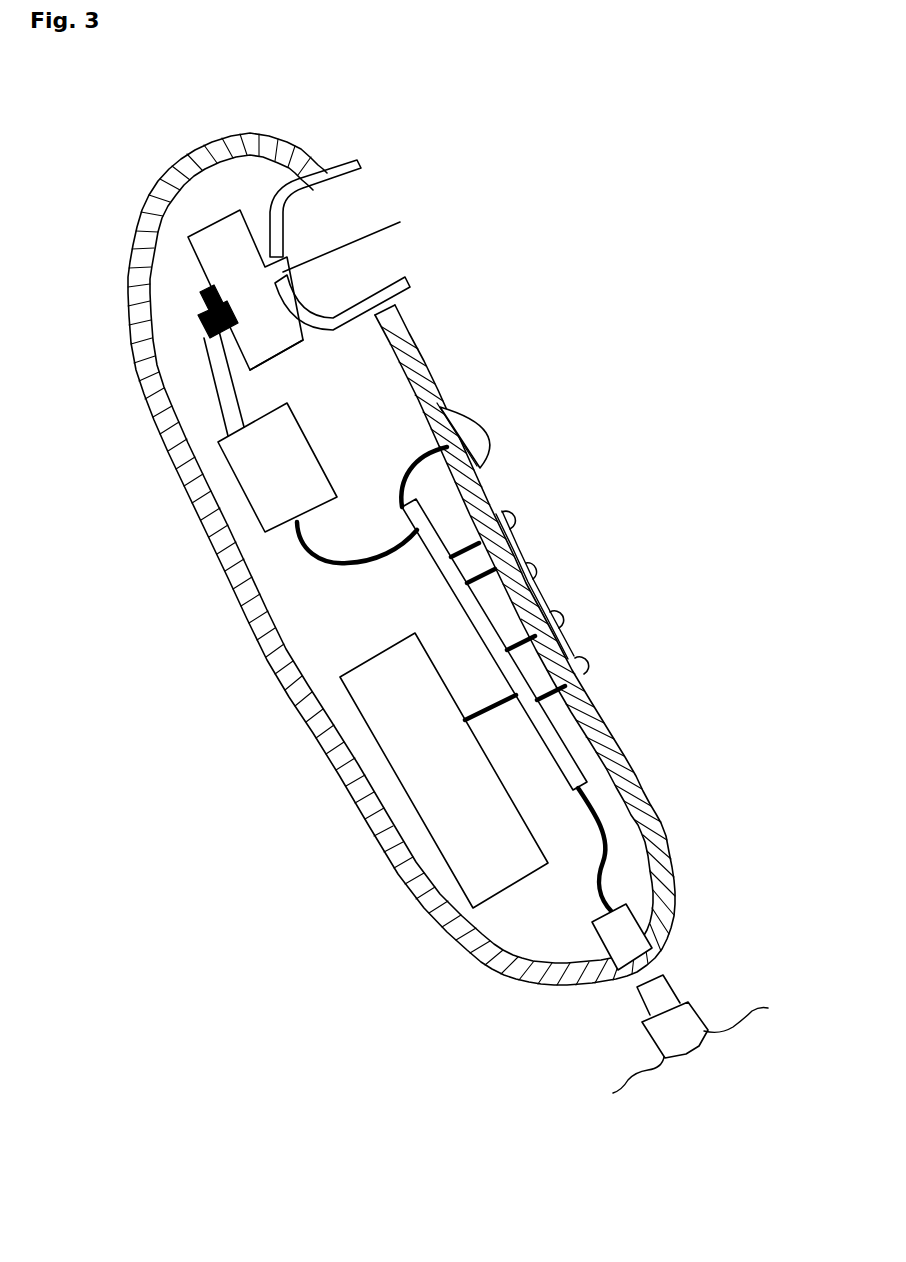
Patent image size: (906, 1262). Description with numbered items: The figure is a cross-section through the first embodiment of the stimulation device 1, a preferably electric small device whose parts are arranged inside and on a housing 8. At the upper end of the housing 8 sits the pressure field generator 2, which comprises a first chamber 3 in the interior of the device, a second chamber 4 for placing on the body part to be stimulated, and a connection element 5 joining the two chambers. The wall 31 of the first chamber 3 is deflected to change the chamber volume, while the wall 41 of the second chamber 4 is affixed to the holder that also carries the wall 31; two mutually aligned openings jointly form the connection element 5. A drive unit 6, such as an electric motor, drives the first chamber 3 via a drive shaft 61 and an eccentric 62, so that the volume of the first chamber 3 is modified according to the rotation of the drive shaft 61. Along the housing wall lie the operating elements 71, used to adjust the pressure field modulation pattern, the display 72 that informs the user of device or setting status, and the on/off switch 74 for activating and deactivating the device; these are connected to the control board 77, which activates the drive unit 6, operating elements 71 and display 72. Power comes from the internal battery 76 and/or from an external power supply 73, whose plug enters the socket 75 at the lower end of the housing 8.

The stimulation device 1 is at (424, 613).
The pressure field generator 2 is at (385, 289).
The first chamber 3 is at (229, 240).
The second chamber 4 is at (345, 215).
The connection element 5 is at (400, 222).
The drive unit 6 is at (263, 487).
The housing 8 is at (445, 915).
The wall of first chamber 31 is at (257, 343).
The wall of second chamber 41 is at (406, 284).
The drive shaft 61 is at (233, 412).
The eccentric 62 is at (200, 316).
The operating element 71 is at (513, 530).
The display 72 is at (540, 600).
The power supply 73 is at (667, 1037).
The on/off switch 74 is at (473, 448).
The socket 75 is at (640, 958).
The battery 76 is at (477, 850).
The control board 77 is at (543, 722).